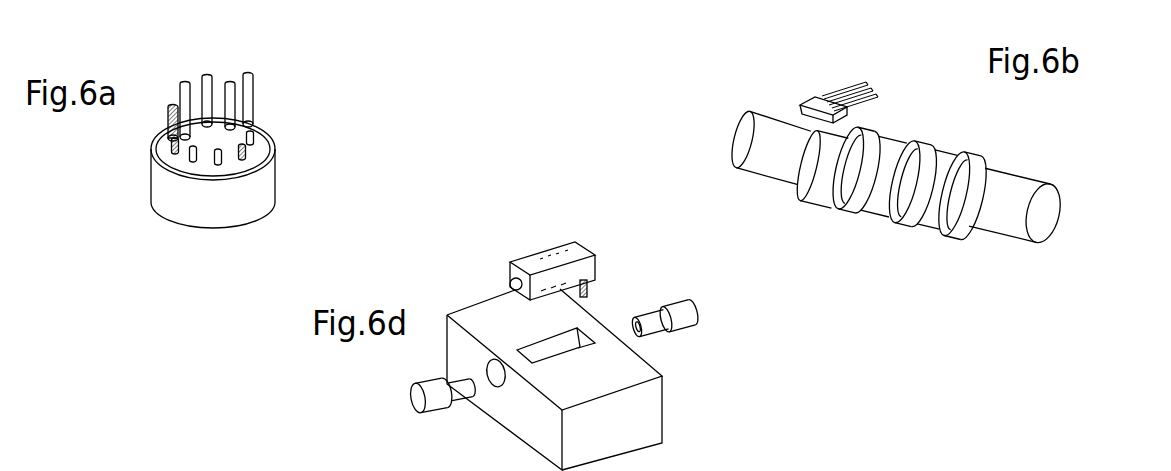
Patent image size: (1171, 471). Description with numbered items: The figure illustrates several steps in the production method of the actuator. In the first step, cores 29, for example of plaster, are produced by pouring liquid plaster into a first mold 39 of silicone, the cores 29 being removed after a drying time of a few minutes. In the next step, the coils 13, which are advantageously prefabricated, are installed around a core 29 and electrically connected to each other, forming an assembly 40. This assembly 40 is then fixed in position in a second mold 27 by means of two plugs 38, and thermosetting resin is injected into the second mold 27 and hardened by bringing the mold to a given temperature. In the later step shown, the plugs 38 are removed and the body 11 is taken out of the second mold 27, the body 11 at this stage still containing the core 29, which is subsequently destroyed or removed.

In FIG. 6d, the body 11 is at (598, 244).
In FIG. 6b, the coils 13 is at (860, 118).
In FIG. 6d, the second mold 27 is at (653, 426).
In FIG. 6a, the cores 29 is at (206, 86).
In FIG. 6b, the cores 29 is at (1020, 180).
In FIG. 6d, the cores 29 is at (508, 283).
In FIG. 6d, the plugs 38 is at (408, 400).
In FIG. 6a, the first mold 39 is at (279, 188).
In FIG. 6b, the assembly 40 is at (1078, 208).